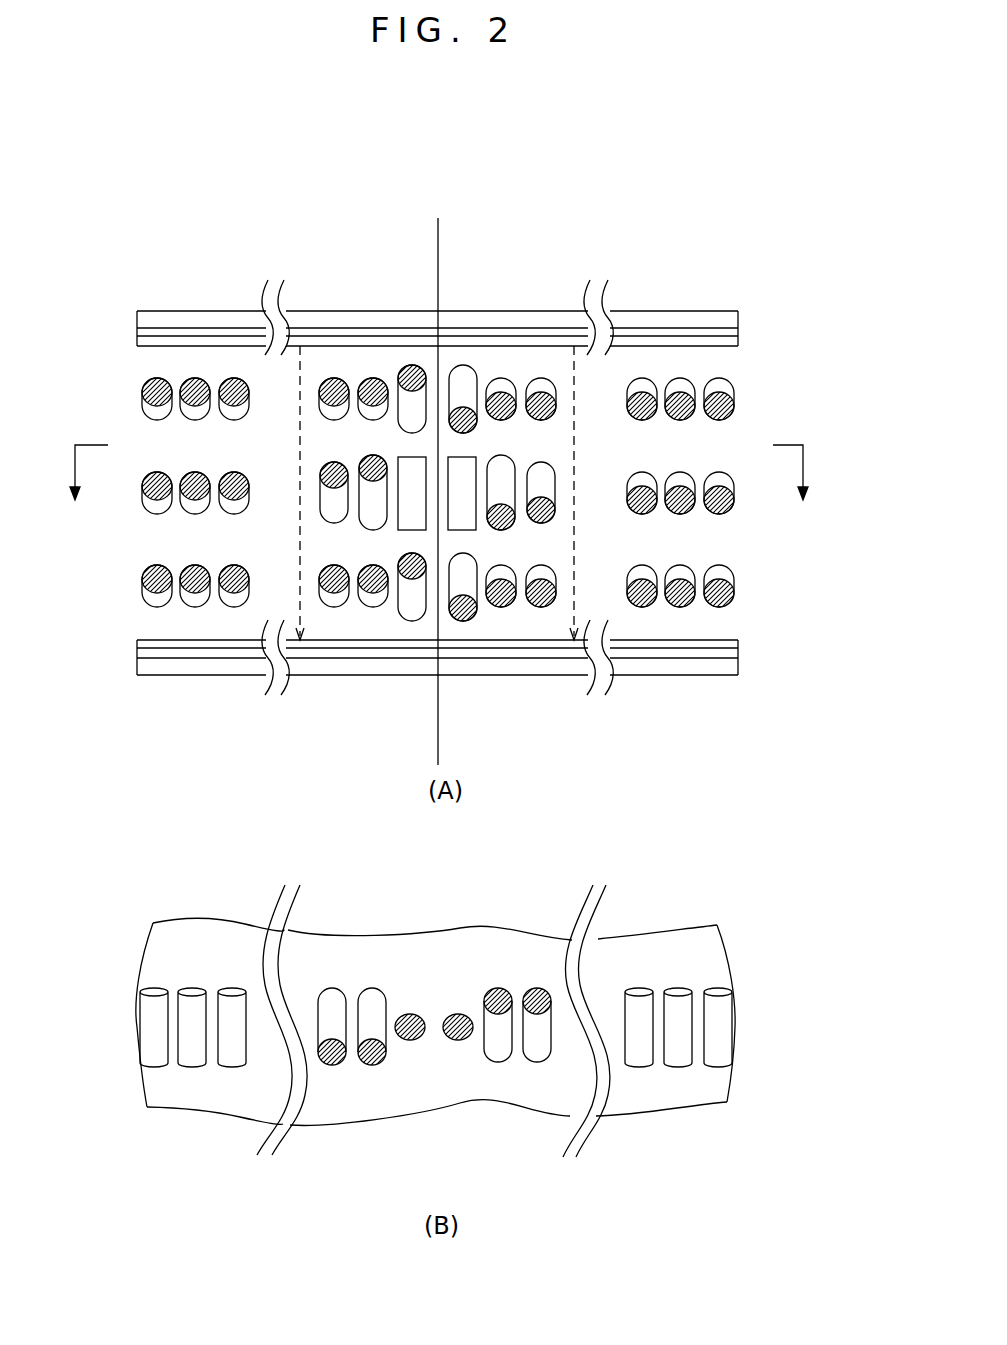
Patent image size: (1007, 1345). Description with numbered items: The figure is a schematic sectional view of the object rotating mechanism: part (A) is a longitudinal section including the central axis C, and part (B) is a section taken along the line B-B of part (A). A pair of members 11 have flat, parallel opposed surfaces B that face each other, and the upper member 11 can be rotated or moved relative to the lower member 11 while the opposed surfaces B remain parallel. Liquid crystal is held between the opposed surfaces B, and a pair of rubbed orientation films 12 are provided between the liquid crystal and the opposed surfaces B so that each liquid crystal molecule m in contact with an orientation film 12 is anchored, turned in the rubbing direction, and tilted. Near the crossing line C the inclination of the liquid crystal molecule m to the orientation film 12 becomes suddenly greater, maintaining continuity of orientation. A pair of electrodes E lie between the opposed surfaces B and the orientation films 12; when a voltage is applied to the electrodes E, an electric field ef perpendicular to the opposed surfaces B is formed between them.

The member 11 is at (658, 318).
The orientation film 12 is at (735, 338).
The liquid crystal molecule m is at (727, 385).
The electrode E is at (137, 331).
The central axis C is at (438, 283).
The opposed surface B is at (668, 710).
The electric field ef is at (439, 493).